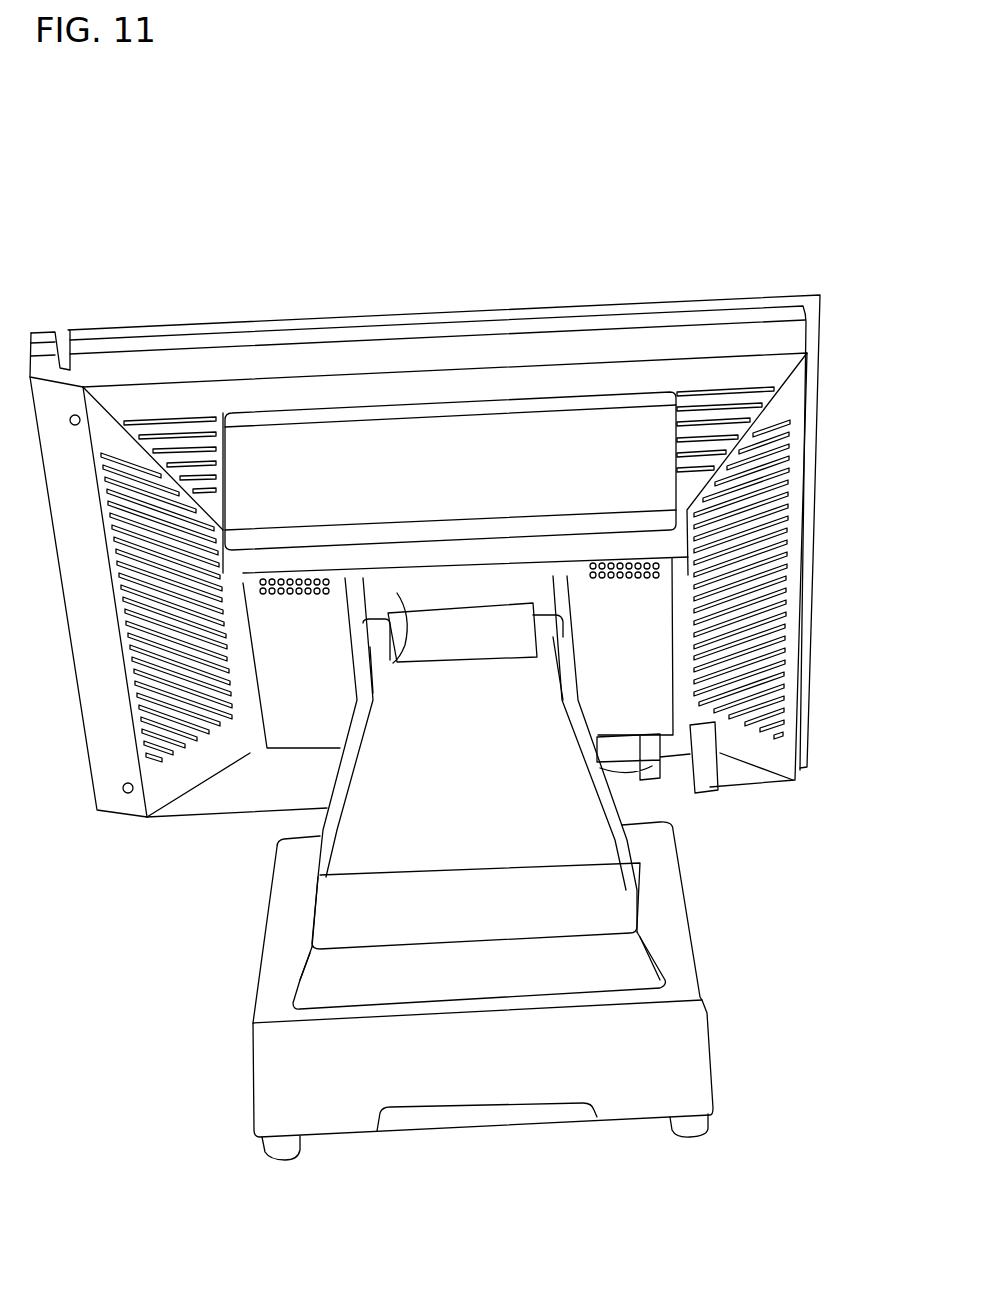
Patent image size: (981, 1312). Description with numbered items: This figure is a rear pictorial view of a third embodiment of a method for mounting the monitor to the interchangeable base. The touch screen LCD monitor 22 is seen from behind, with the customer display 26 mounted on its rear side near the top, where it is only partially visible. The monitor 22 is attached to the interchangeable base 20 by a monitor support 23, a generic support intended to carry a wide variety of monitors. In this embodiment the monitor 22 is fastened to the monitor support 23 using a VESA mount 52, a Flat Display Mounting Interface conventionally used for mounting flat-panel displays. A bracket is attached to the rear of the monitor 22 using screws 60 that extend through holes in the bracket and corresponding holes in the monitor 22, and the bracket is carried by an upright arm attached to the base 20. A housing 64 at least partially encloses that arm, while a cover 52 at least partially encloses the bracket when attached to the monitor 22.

The interchangeable base 20 is at (645, 1097).
The monitor 22 is at (610, 308).
The monitor support 23 is at (447, 805).
The customer display 26 is at (291, 455).
The VESA mount 52 is at (397, 593).
The screws 60 is at (539, 568).
The housing 64 is at (622, 825).